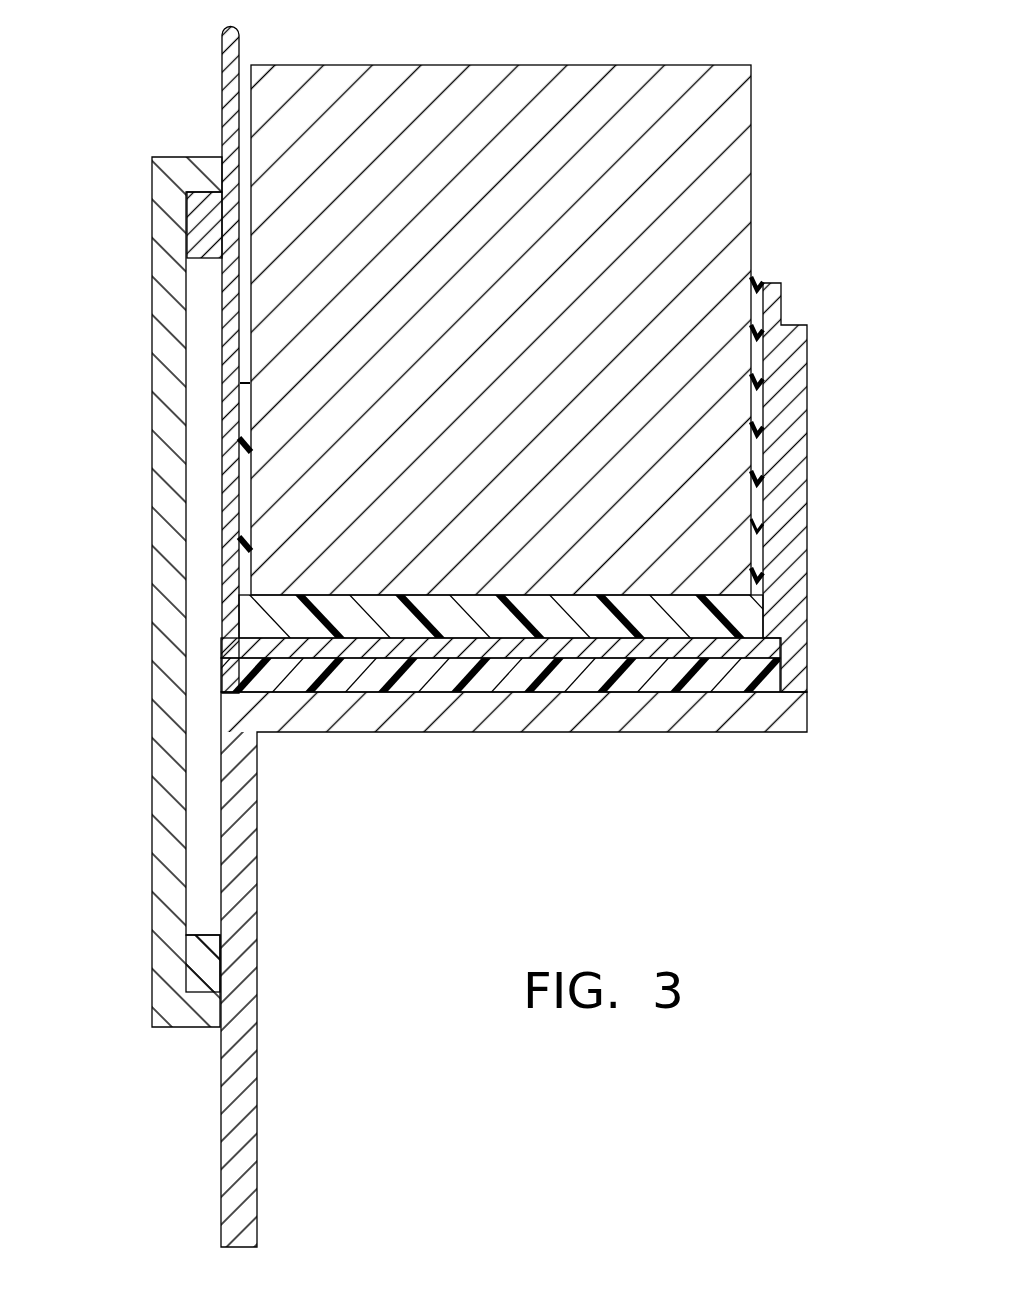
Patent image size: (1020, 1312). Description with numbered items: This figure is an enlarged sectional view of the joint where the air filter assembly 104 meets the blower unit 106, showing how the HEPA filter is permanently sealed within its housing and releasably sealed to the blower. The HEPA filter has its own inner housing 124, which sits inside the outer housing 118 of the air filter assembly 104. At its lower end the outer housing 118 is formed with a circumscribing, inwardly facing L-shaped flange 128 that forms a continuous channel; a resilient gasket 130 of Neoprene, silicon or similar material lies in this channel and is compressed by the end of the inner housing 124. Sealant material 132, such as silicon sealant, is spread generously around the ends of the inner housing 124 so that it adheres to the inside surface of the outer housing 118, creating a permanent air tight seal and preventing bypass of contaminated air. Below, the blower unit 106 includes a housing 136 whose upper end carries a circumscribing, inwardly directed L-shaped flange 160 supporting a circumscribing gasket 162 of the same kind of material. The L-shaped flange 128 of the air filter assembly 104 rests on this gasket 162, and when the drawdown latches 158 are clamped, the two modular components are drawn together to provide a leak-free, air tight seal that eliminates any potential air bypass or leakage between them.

The air filter assembly 104 is at (210, 126).
The blower unit 106 is at (208, 1141).
The outer housing 118 is at (222, 53).
The inner housing 124 is at (518, 82).
The L-shaped flange 128 is at (783, 283).
The resilient gasket 130 is at (730, 620).
The sealant material 132 is at (245, 466).
The housing 136 is at (240, 943).
The drawdown latches 158 is at (165, 843).
The L-shaped flange 160 is at (541, 711).
The gasket 162 is at (728, 671).